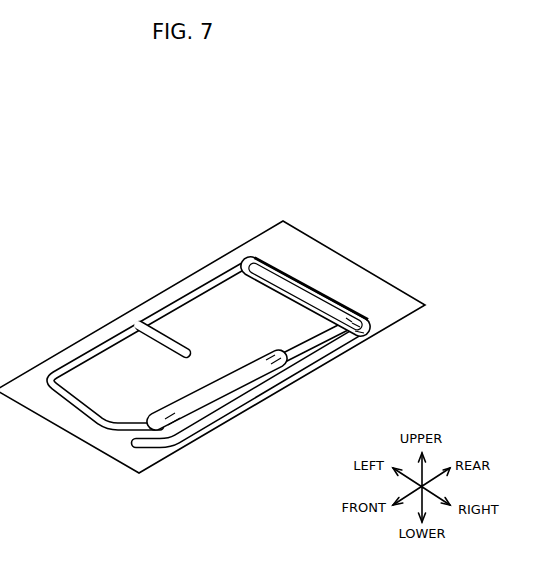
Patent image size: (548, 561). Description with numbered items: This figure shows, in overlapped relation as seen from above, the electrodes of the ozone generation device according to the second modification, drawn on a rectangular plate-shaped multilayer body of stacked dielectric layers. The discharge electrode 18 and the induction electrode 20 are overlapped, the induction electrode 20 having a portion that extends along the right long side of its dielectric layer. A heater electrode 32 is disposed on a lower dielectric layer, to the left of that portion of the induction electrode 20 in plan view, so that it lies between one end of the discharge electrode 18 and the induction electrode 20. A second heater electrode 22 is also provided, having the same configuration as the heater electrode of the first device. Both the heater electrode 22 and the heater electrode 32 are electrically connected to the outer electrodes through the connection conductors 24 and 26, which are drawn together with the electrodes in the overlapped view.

The discharge electrode 18 is at (163, 338).
The induction electrode 20 is at (364, 312).
The heater electrode 22 is at (342, 279).
The connection conductor 24 is at (77, 355).
The connection conductor 26 is at (312, 363).
The heater electrode 32 is at (221, 379).